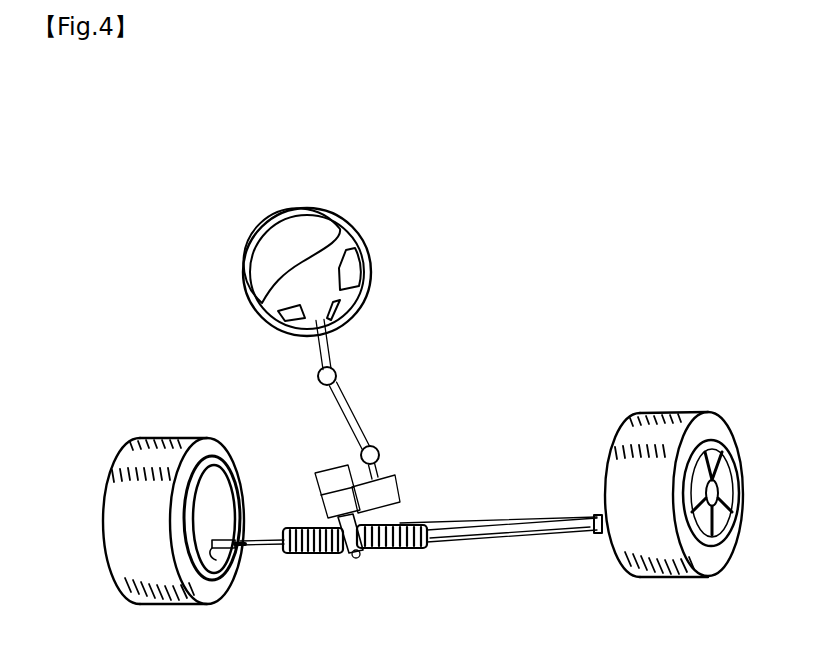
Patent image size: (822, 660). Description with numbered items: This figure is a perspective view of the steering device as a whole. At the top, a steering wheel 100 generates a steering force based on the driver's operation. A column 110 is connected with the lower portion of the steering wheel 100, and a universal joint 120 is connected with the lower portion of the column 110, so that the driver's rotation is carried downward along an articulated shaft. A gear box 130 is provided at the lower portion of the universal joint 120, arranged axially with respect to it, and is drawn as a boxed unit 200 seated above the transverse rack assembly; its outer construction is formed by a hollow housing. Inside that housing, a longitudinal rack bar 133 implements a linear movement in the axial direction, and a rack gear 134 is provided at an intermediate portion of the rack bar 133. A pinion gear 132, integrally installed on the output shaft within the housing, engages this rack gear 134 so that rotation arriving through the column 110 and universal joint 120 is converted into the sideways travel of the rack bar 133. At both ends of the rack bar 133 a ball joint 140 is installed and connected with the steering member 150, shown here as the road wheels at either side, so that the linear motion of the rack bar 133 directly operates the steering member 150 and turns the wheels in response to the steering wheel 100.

The steering wheel 100 is at (340, 236).
The column 110 is at (333, 333).
The universal joint 120 is at (384, 446).
The gear box 130 is at (421, 509).
The pinion gear 132 is at (342, 550).
The rack bar 133 is at (517, 520).
The rack gear 134 is at (405, 520).
The ball joint 140 is at (222, 540).
The steering member 150 is at (640, 432).
The steering gear box / actuator 200 is at (321, 456).